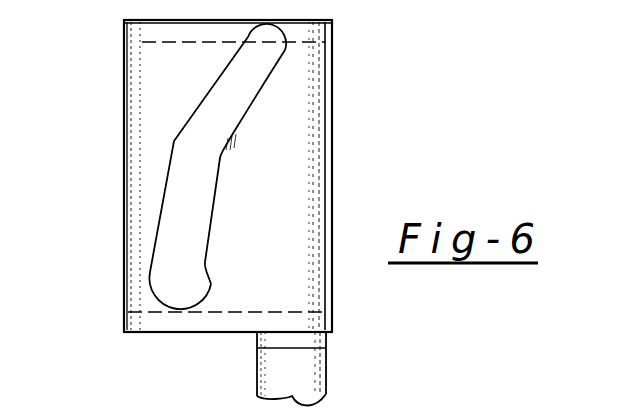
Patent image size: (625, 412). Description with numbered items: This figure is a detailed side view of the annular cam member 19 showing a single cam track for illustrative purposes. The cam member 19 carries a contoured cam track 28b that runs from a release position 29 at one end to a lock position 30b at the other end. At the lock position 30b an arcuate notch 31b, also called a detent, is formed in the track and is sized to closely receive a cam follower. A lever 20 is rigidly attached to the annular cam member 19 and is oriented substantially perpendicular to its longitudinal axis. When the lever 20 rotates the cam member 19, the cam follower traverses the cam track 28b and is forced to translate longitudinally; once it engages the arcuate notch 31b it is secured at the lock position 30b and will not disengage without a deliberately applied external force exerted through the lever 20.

The annular cam member 19 is at (367, 122).
The lever 20 is at (307, 370).
The cam track 28b is at (187, 144).
The release position 29 is at (273, 52).
The lock position 30b is at (168, 280).
The arcuate notch 31b is at (210, 300).